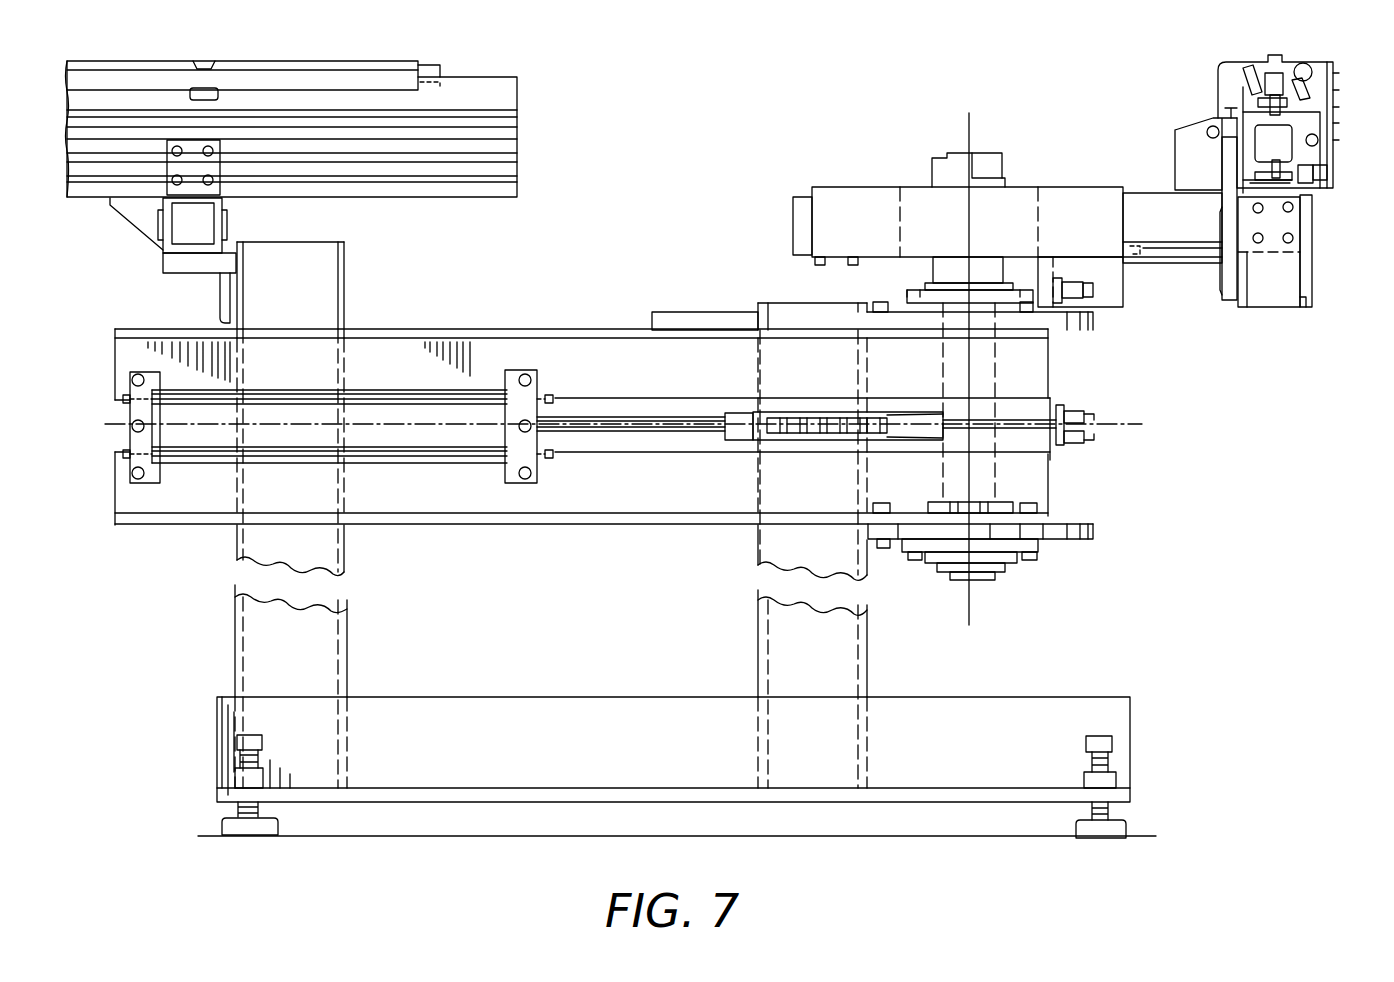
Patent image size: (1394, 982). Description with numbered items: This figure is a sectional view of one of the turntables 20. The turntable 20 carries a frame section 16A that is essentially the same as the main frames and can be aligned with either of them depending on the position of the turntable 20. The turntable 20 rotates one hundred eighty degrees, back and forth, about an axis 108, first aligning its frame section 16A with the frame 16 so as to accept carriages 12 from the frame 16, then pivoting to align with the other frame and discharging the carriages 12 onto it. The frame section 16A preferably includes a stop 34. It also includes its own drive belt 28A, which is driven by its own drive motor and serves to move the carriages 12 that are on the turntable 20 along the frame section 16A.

The frame 16 is at (509, 92).
The axis 108 is at (969, 143).
The drive belt 28A is at (1240, 105).
The carriage 12 is at (1338, 77).
The stop 34 is at (1180, 147).
The frame section 16A is at (1302, 285).
The turntable 20 is at (1172, 360).